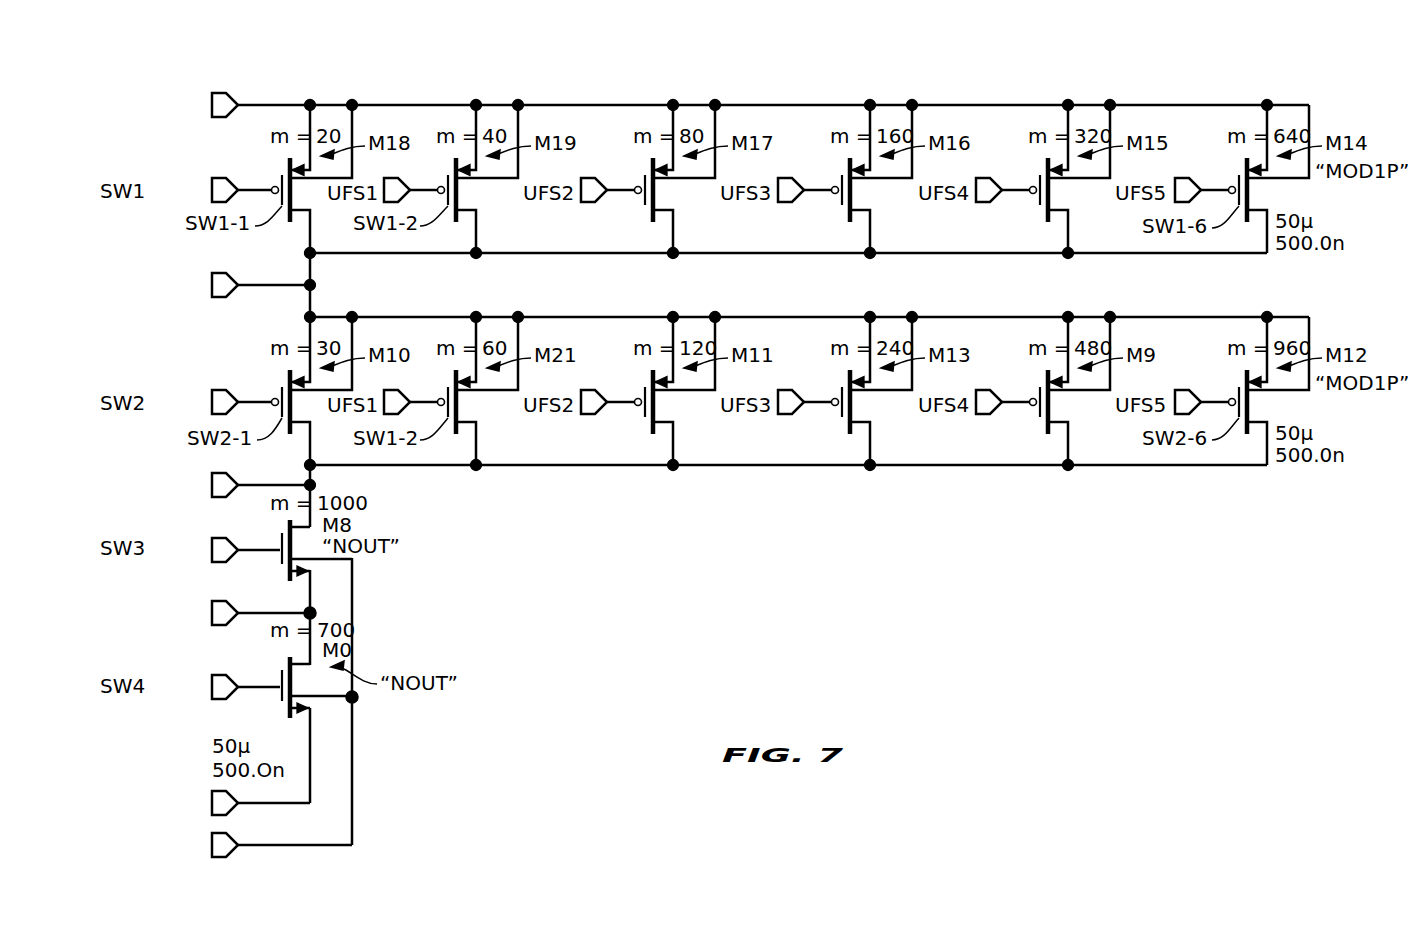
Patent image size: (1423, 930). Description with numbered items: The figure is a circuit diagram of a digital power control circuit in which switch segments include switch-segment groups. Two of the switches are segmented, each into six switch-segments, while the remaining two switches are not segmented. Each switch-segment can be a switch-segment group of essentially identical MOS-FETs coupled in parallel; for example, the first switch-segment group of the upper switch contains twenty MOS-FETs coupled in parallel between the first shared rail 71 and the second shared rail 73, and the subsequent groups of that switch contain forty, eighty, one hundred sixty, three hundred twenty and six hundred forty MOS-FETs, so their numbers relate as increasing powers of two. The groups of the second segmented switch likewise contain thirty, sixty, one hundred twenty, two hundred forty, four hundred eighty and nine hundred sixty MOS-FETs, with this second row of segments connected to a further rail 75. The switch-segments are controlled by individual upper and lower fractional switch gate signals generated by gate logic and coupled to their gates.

The first shared rail 71 is at (248, 104).
The second shared rail 73 is at (442, 315).
The output node of second transistor row 75 is at (443, 466).